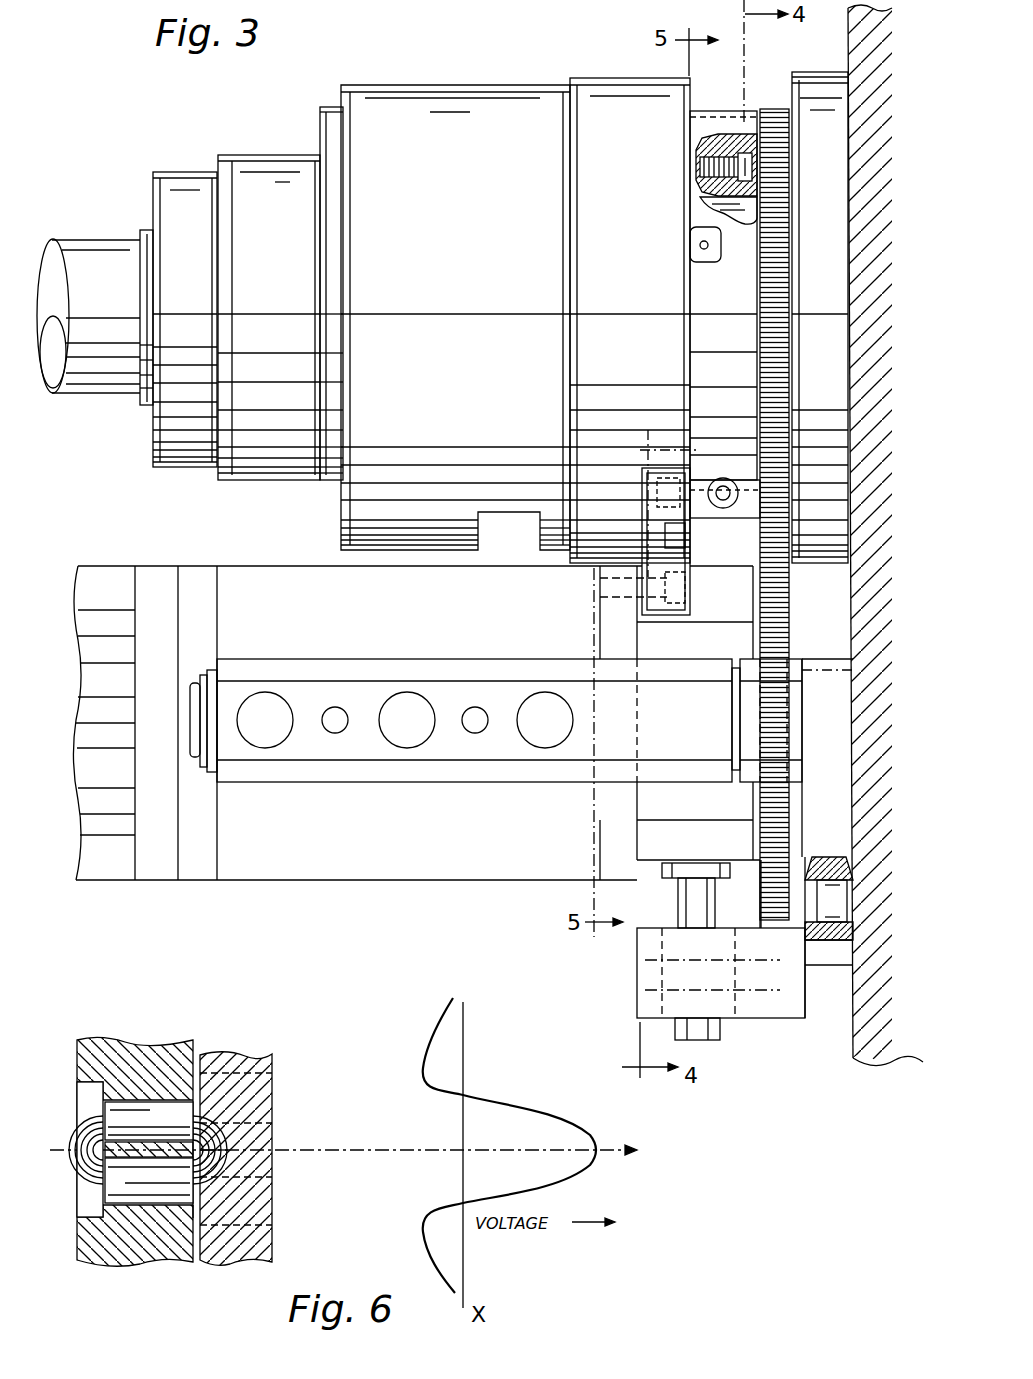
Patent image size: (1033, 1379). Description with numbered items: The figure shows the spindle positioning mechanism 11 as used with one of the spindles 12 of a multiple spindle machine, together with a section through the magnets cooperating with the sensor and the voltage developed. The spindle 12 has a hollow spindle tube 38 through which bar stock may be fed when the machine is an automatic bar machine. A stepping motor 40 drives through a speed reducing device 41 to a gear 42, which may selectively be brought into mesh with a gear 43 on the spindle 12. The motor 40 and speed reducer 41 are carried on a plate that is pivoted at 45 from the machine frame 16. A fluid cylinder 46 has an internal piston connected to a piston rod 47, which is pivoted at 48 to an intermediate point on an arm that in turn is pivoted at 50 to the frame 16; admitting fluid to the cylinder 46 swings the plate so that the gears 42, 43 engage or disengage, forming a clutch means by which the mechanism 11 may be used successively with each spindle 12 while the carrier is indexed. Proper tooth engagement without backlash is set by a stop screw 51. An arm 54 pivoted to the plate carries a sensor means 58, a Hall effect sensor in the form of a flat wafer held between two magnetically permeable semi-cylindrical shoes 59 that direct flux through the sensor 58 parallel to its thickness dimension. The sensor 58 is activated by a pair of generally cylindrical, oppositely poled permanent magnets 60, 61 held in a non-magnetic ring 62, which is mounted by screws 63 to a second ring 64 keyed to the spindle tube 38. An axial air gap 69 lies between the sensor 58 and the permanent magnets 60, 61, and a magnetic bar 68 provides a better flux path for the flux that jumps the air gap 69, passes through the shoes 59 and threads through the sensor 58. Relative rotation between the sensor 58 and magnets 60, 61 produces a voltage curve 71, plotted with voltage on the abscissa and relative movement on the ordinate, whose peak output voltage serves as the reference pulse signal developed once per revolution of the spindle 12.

In FIG. 3, the spindle positioning mechanism 11 is at (436, 907).
In FIG. 3, the spindle 12 is at (437, 84).
In FIG. 3, the machine frame 16 is at (873, 1052).
In FIG. 3, the spindle tube 38 is at (105, 239).
In FIG. 3, the motor 40 is at (115, 880).
In FIG. 3, the speed reducing device 41 is at (310, 880).
In FIG. 3, the gear 42 is at (770, 876).
In FIG. 3, the gear 43 is at (766, 108).
In FIG. 3, the pivot 45 is at (500, 735).
In FIG. 3, the fluid cylinder 46 is at (652, 866).
In FIG. 3, the piston rod 47 is at (684, 892).
In FIG. 3, the pivot 48 is at (653, 960).
In FIG. 3, the pivot 50 is at (653, 990).
In FIG. 3, the stop screw 51 is at (703, 1040).
In FIG. 3, the arm 54 is at (657, 530).
In FIG. 6, the arm 54 is at (265, 1102).
In FIG. 3, the sensor means 58 is at (642, 473).
In FIG. 6, the sensor means 58 is at (230, 1153).
In FIG. 3, the semi-cylindrical shoes 59 is at (666, 456).
In FIG. 6, the semi-cylindrical shoes 59 is at (212, 1150).
In FIG. 6, the permanent magnet 60 is at (149, 1120).
In FIG. 6, the permanent magnet 61 is at (149, 1181).
In FIG. 3, the non-magnetic ring 62 is at (722, 108).
In FIG. 6, the non-magnetic ring 62 is at (147, 1257).
In FIG. 3, the screws 63 is at (745, 165).
In FIG. 3, the second ring 64 is at (750, 190).
In FIG. 6, the magnetic bar 68 is at (90, 1092).
In FIG. 3, the air gap 69 is at (694, 480).
In FIG. 6, the air gap 69 is at (195, 1220).
In FIG. 6, the voltage curve 71 is at (507, 1105).